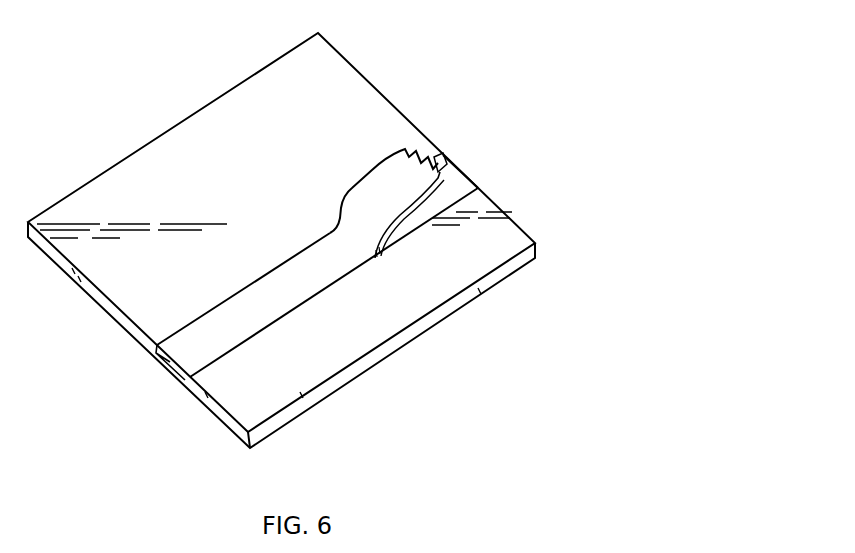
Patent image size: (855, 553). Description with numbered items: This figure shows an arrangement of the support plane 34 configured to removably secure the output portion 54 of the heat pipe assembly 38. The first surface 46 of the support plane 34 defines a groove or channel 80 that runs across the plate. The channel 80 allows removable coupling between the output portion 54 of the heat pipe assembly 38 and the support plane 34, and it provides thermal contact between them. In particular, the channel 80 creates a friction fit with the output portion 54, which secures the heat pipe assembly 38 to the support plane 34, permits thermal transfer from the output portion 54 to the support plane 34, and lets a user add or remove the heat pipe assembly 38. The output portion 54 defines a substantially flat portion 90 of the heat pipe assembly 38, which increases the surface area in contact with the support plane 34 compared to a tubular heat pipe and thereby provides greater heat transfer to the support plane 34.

The support plane 34 is at (362, 72).
The heat pipe assembly 38 is at (187, 363).
The first surface 46 is at (295, 381).
The output portion 54 is at (251, 264).
The channel 80 is at (470, 164).
The substantially flat portion 90 is at (208, 338).